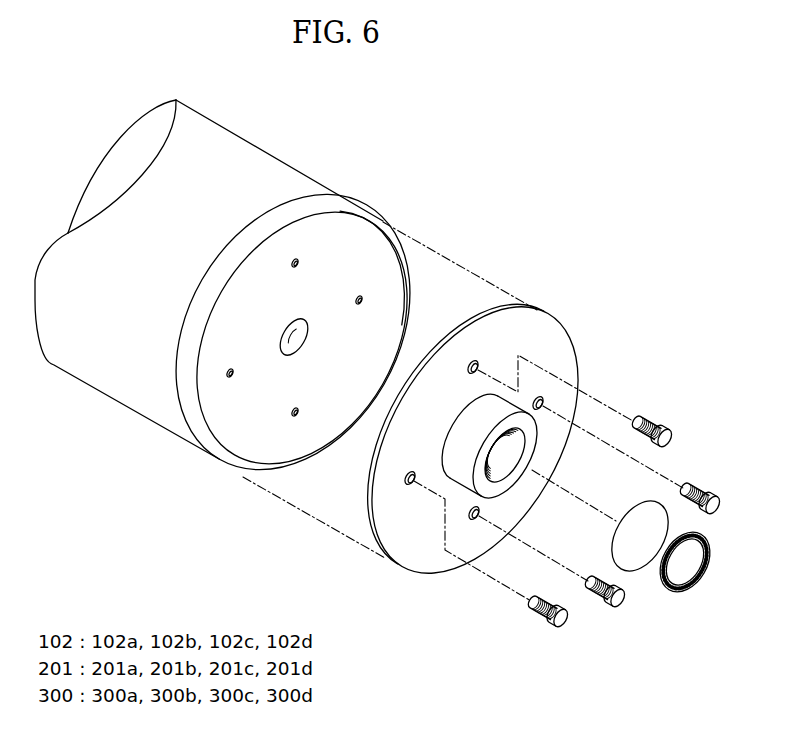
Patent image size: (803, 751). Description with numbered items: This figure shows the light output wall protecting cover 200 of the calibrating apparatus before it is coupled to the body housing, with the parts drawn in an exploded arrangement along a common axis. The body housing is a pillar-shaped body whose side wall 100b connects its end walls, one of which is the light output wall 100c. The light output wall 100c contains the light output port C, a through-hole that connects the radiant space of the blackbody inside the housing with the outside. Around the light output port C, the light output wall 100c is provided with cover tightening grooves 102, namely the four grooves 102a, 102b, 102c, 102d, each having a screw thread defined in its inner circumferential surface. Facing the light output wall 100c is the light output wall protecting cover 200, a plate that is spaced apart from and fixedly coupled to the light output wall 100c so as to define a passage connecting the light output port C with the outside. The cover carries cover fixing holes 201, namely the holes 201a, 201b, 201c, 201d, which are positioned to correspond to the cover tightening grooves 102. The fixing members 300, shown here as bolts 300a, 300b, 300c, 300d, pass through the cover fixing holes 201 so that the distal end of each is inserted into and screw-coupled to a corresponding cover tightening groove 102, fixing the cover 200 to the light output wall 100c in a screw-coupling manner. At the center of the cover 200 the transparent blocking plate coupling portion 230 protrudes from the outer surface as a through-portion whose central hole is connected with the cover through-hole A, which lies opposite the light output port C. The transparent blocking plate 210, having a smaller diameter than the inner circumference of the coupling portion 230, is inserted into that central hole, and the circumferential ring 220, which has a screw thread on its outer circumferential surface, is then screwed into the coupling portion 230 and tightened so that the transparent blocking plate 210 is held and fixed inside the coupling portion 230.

The side wall 100b is at (253, 163).
The light output wall 100c is at (328, 207).
The cover tightening grooves 102 is at (297, 351).
The cover tightening groove 102a is at (300, 262).
The cover tightening groove 102b is at (364, 299).
The cover tightening groove 102c is at (291, 416).
The cover tightening groove 102d is at (227, 377).
The light output port C is at (307, 336).
The light output wall protecting cover 200 is at (430, 574).
The cover fixing holes 201 is at (489, 441).
The cover fixing hole 201a is at (478, 360).
The cover fixing hole 201b is at (545, 400).
The cover fixing hole 201c is at (475, 521).
The cover fixing hole 201d is at (408, 488).
The transparent blocking plate coupling portion 230 is at (463, 442).
The cover through-hole A is at (512, 452).
The transparent blocking plate 210 is at (638, 556).
The circumferential ring 220 is at (693, 592).
The fixing members 300 is at (631, 529).
The fixing member 300a is at (652, 421).
The fixing member 300b is at (700, 488).
The fixing member 300c is at (600, 601).
The fixing member 300d is at (542, 619).